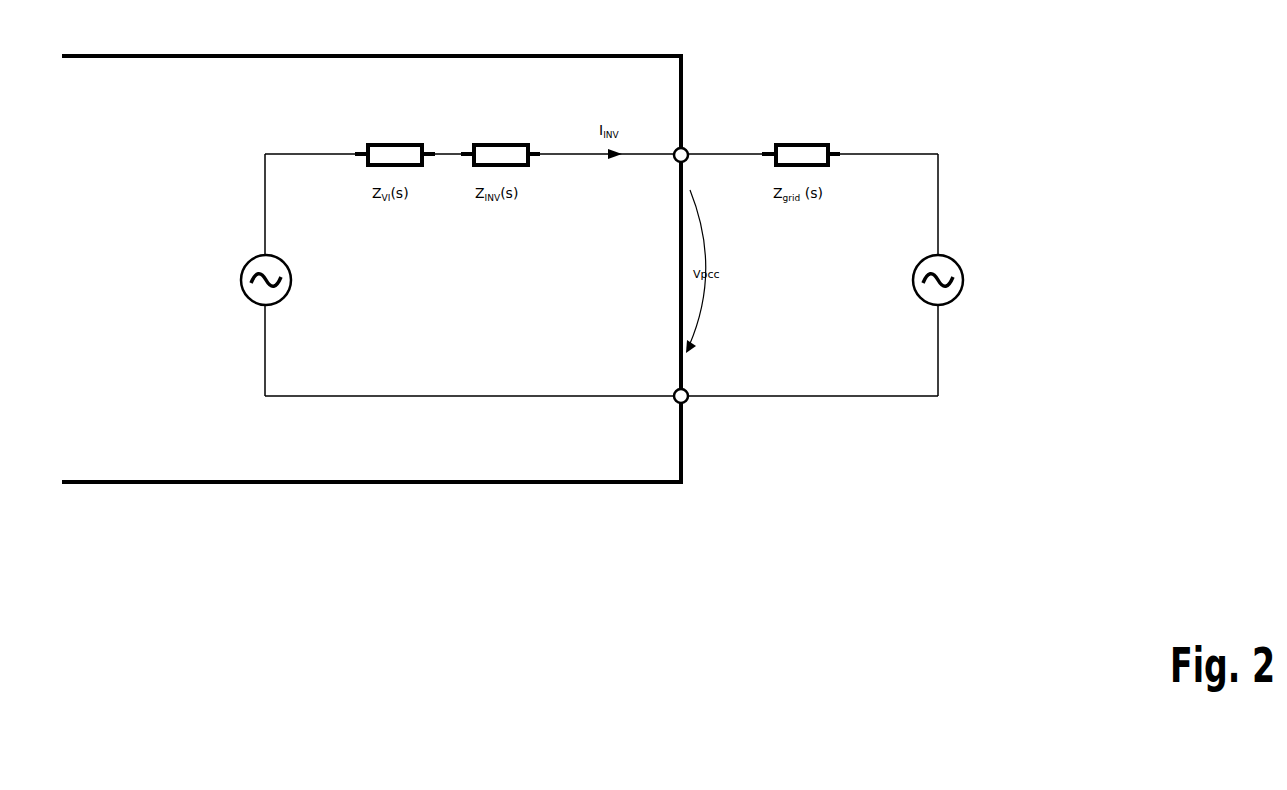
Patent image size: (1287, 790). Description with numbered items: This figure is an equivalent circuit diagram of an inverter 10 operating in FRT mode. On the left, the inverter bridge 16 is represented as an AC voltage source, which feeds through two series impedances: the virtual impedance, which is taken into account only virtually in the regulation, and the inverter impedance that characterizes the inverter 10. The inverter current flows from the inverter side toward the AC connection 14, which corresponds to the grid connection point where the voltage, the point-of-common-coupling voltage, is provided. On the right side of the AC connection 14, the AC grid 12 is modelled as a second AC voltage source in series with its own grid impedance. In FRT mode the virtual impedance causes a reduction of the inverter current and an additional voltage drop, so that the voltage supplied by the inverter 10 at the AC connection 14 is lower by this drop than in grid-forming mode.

The inverter 10 is at (662, 96).
The AC grid 12 is at (964, 282).
The AC connection 14 is at (687, 147).
The inverter bridge 16 is at (241, 276).